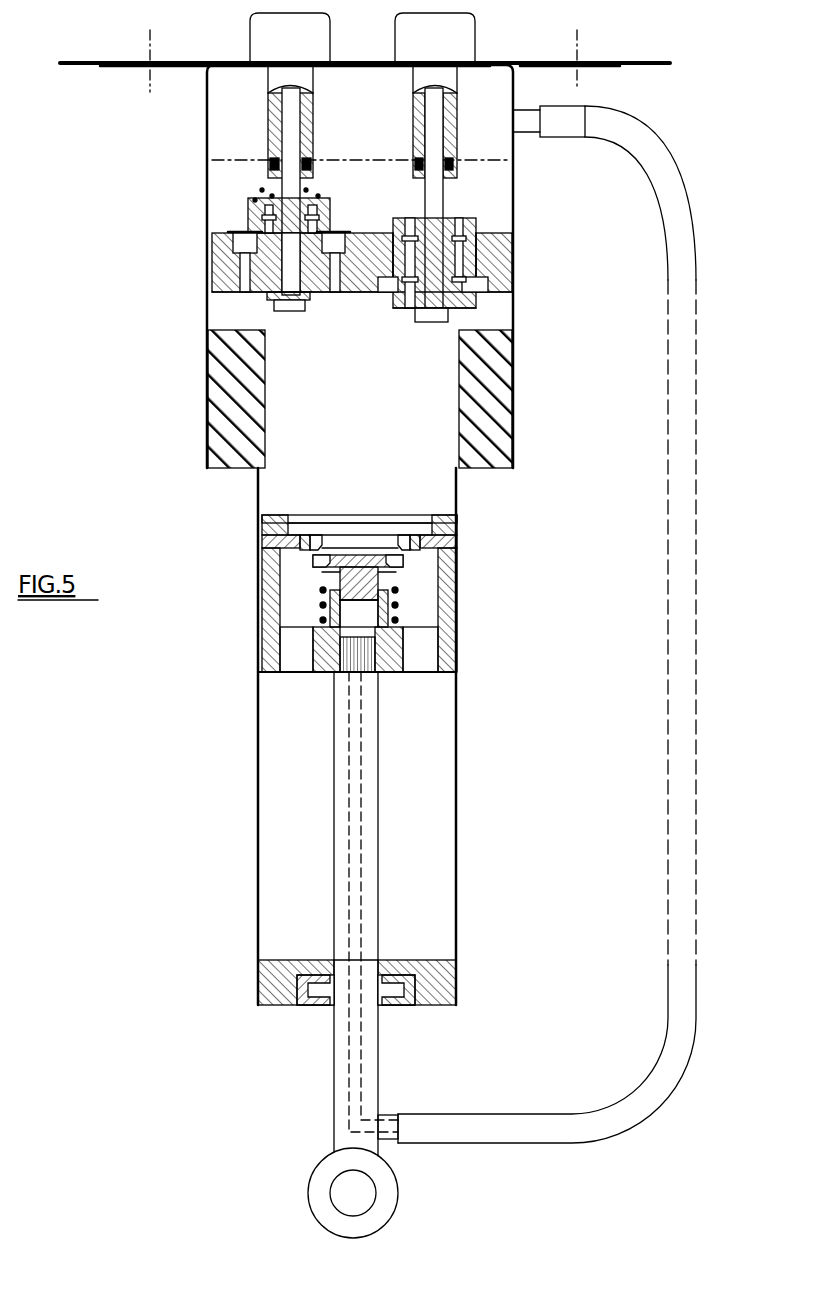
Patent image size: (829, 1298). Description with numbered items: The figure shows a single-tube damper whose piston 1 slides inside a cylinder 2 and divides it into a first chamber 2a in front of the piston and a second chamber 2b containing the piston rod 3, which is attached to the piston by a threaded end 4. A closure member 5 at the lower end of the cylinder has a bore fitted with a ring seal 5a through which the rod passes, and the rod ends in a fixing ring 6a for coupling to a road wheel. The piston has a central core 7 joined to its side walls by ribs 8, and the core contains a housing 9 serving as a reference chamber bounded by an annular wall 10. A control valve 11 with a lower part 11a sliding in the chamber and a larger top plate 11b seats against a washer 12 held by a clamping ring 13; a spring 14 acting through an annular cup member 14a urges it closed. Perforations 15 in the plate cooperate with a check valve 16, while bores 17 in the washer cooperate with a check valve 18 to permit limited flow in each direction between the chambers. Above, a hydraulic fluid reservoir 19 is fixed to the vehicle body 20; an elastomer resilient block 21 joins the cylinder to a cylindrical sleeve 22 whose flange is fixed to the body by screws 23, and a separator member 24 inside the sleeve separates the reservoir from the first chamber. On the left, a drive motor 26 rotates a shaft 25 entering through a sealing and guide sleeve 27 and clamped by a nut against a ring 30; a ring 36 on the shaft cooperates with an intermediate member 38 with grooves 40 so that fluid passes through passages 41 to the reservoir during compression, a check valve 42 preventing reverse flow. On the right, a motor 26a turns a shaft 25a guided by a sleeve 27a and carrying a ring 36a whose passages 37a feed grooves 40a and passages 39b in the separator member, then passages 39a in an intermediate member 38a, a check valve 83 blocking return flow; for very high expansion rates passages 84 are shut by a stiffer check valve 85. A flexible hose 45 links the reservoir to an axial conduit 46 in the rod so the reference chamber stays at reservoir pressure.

The piston 1 is at (447, 638).
The cylinder 2 is at (462, 741).
The first chamber 2a is at (392, 391).
The second chamber 2b is at (405, 834).
The piston rod 3 is at (341, 804).
The threaded end 4 is at (363, 658).
The closure member 5 is at (432, 983).
The ring seal 5a is at (400, 1004).
The fixing ring 6a is at (385, 1190).
The central core 7 is at (328, 658).
The ribs 8 is at (298, 651).
The housing (reference chamber) 9 is at (313, 627).
The annular wall 10 is at (357, 615).
The control valve 11 is at (364, 540).
The lower part of control valve 11a is at (372, 588).
The top plate 11b is at (407, 556).
The washer 12 is at (262, 538).
The clamping ring 13 is at (262, 517).
The spring 14 is at (393, 616).
The annular cup member 14a is at (387, 574).
The perforations 15 is at (313, 559).
The check valve 16 is at (336, 567).
The bores 17 is at (303, 535).
The check valve 18 is at (317, 535).
The hydraulic fluid reservoir 19 is at (206, 146).
The body 20 is at (76, 66).
The elastomer resilient block 21 is at (492, 426).
The cylindrical sleeve 22 is at (206, 326).
The screws 23 is at (147, 78).
The separator member 24 is at (227, 258).
The rotatable shaft 25 is at (290, 137).
The rotatable shaft 25a is at (435, 141).
The drive motor 26 is at (270, 41).
The motor 26a is at (420, 43).
The sealing and guide sleeve 27 is at (292, 116).
The sleeve 27a is at (436, 117).
The anti-friction washer (ring) 30 is at (272, 298).
The ring 36 is at (252, 203).
The ring 36a is at (398, 218).
The passages 37a is at (455, 223).
The intermediate member 38 is at (250, 221).
The intermediate member 38a is at (472, 304).
The passages 39a is at (458, 288).
The passages 39b is at (458, 258).
The curvilinear oblong grooves 40 is at (318, 220).
The curved grooves 40a is at (455, 239).
The passages 41 is at (247, 276).
The check valve 42 is at (232, 233).
The flexible hose 45 is at (667, 630).
The axial conduit 46 is at (349, 866).
The check valve 83 is at (408, 310).
The passages 84 is at (388, 256).
The check valve 85 is at (386, 298).